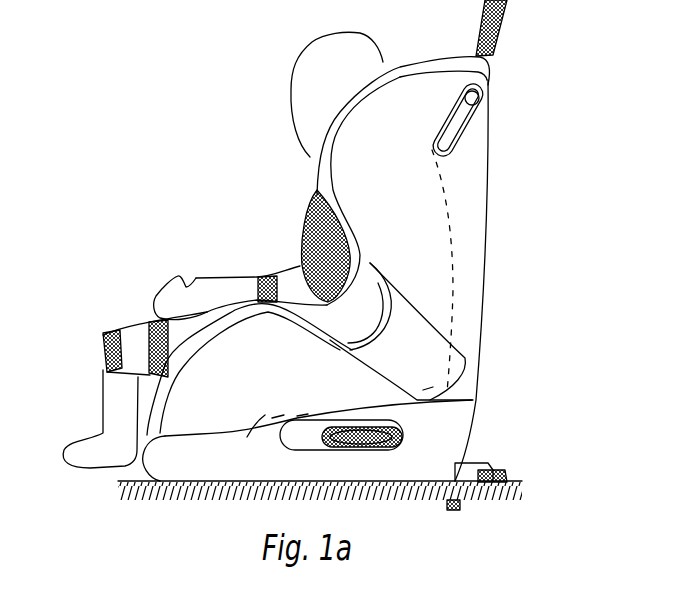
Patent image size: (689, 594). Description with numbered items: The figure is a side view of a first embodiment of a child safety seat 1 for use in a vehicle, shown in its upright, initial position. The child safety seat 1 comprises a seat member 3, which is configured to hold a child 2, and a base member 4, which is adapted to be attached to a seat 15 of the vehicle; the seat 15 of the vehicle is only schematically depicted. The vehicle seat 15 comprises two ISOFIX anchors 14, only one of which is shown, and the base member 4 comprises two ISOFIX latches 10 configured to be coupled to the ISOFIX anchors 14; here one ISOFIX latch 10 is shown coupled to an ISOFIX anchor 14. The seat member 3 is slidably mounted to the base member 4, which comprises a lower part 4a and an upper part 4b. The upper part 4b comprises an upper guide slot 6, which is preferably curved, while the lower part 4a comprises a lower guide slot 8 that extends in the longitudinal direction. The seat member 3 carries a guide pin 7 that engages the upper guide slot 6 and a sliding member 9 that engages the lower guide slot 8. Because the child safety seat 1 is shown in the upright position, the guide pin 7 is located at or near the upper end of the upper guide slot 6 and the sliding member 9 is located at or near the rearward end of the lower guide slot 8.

The child safety seat 1 is at (540, 183).
The child 2 is at (317, 68).
The seat member 3 is at (363, 197).
The base member 4 is at (163, 457).
The lower part 4a is at (197, 467).
The upper part 4b is at (477, 377).
The upper guide slot 6 is at (487, 117).
The guide pin 7 is at (487, 90).
The lower guide slot 8 is at (307, 437).
The sliding member 9 is at (380, 447).
The ISOFIX latch 10 is at (473, 457).
The ISOFIX anchor 14 is at (507, 473).
The seat of the vehicle 15 is at (448, 497).